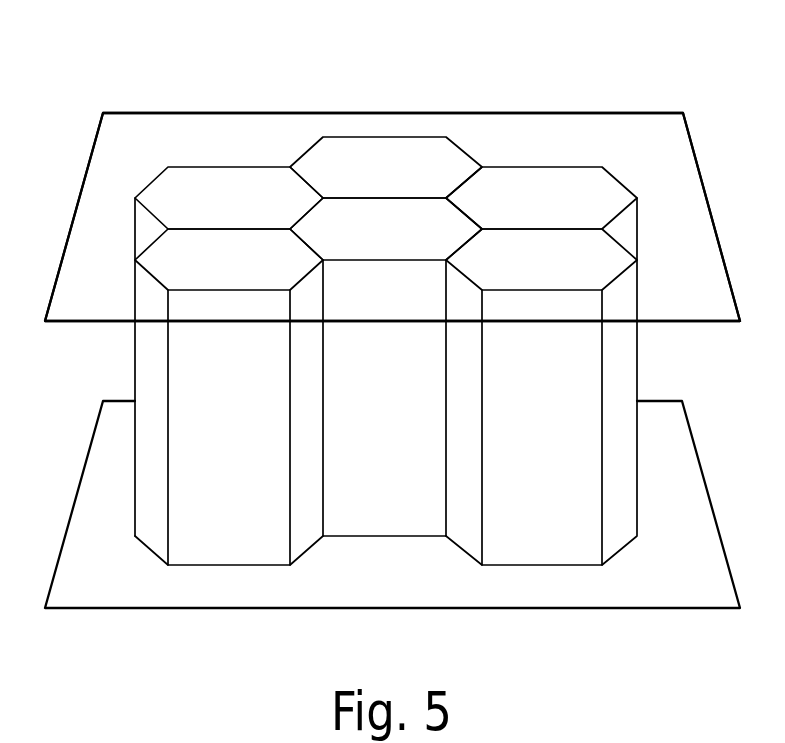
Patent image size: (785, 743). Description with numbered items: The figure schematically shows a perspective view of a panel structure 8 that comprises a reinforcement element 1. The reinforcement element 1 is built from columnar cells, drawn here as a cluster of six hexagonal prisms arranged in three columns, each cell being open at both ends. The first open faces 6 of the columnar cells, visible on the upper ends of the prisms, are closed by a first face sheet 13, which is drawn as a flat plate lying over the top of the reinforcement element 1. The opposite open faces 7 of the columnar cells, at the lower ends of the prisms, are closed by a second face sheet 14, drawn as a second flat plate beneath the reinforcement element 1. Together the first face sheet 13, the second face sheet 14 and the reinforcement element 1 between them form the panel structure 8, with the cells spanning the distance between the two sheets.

The reinforcement element 1 is at (370, 339).
The first open face 6 is at (590, 267).
The opposite second open face 7 is at (568, 509).
The panel structure 8 is at (213, 112).
The first face sheet 13 is at (522, 143).
The second face sheet 14 is at (603, 585).